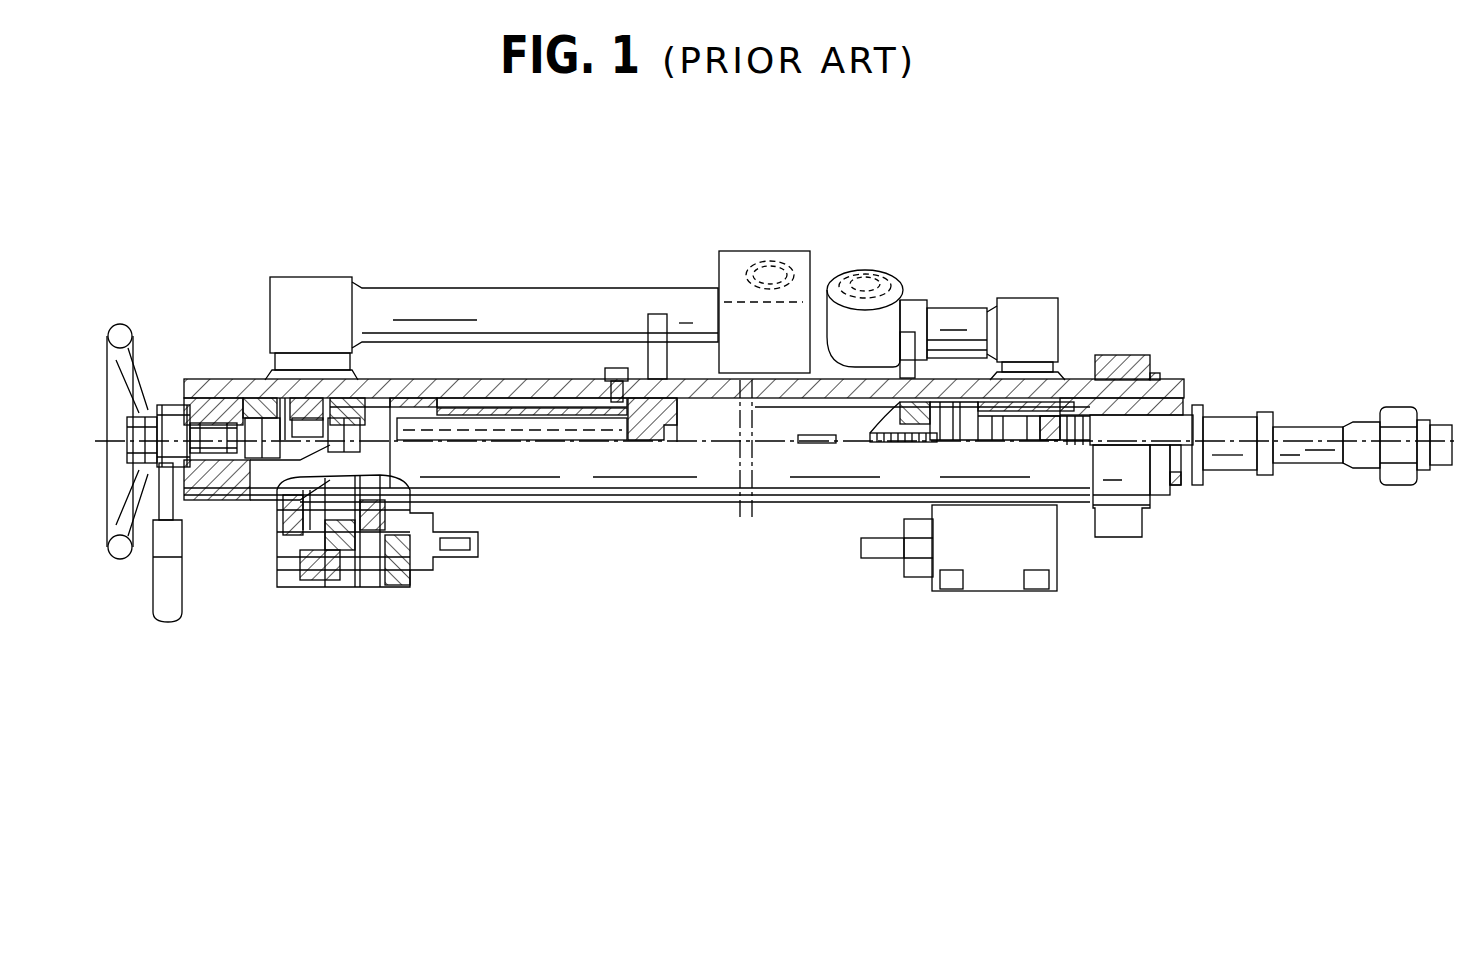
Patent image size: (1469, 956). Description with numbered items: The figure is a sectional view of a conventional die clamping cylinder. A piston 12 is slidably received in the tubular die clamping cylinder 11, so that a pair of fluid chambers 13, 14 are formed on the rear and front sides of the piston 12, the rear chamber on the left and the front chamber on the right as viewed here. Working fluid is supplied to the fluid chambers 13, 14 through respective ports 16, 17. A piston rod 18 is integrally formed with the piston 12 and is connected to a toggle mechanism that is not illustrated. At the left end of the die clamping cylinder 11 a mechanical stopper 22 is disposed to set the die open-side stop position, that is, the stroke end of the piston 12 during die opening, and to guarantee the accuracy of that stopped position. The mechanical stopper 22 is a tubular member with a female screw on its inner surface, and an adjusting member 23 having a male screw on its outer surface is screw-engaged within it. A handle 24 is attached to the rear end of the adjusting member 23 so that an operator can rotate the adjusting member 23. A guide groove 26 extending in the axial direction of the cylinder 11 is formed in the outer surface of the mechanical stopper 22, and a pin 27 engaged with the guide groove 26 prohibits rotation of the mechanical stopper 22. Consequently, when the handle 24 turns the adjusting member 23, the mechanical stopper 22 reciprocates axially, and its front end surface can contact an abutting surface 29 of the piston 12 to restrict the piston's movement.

The die clamping cylinder 11 is at (645, 477).
The piston 12 is at (968, 432).
The fluid chamber 13 is at (775, 426).
The fluid chamber 14 is at (1060, 412).
The port 16 is at (307, 387).
The port 17 is at (1030, 388).
The piston rod 18 is at (1307, 432).
The mechanical stopper 22 is at (661, 432).
The adjusting member 23 is at (532, 430).
The handle 24 is at (120, 553).
The guide groove 26 is at (487, 406).
The pin 27 is at (616, 368).
The abutting surface 29 is at (900, 425).